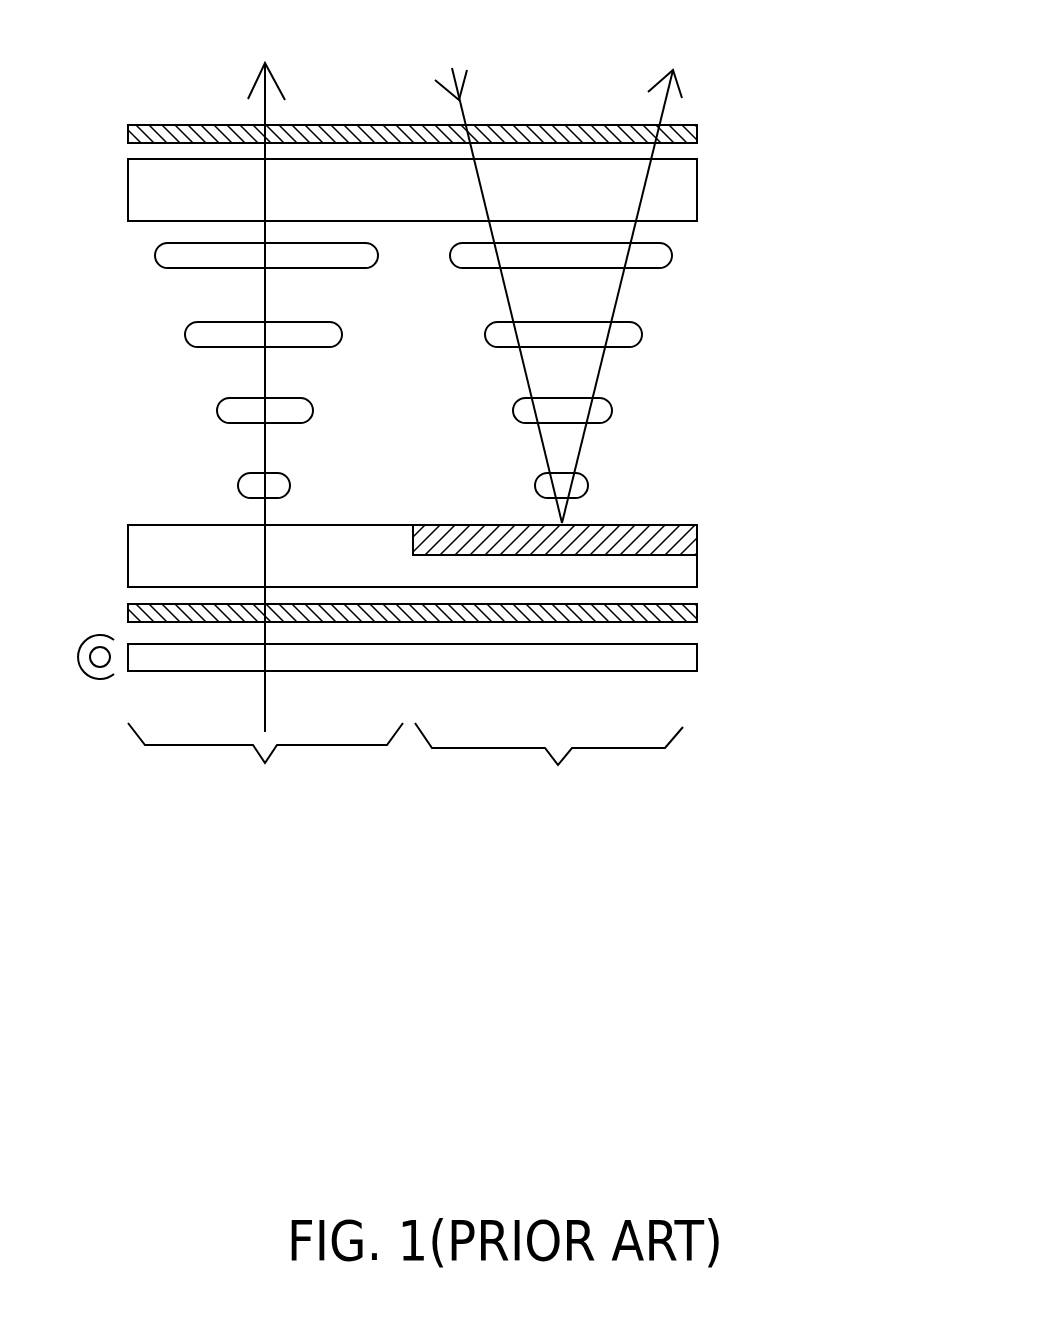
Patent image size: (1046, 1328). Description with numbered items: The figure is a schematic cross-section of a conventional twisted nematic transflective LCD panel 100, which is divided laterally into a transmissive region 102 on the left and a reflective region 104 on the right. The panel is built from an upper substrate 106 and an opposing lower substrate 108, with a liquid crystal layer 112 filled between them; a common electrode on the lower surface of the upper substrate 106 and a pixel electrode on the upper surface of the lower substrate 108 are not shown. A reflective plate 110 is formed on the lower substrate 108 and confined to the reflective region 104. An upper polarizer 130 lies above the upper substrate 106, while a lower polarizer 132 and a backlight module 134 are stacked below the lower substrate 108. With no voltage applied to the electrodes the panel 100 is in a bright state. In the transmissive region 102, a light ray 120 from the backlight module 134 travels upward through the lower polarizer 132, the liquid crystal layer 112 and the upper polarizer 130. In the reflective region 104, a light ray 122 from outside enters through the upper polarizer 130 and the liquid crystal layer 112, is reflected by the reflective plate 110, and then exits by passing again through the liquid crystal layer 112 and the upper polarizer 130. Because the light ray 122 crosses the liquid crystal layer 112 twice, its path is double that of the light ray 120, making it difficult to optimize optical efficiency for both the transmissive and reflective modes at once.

The TN transflective LCD panel 100 is at (760, 58).
The transmissive region 102 is at (265, 769).
The reflective region 104 is at (549, 769).
The upper substrate 106 is at (685, 198).
The lower substrate 108 is at (678, 577).
The reflective plate 110 is at (697, 528).
The liquid crystal layer 112 is at (635, 373).
The light ray 120 is at (267, 108).
The light ray 122 is at (663, 110).
The upper polarizer 130 is at (688, 134).
The lower polarizer 132 is at (680, 618).
The backlight module 134 is at (697, 662).